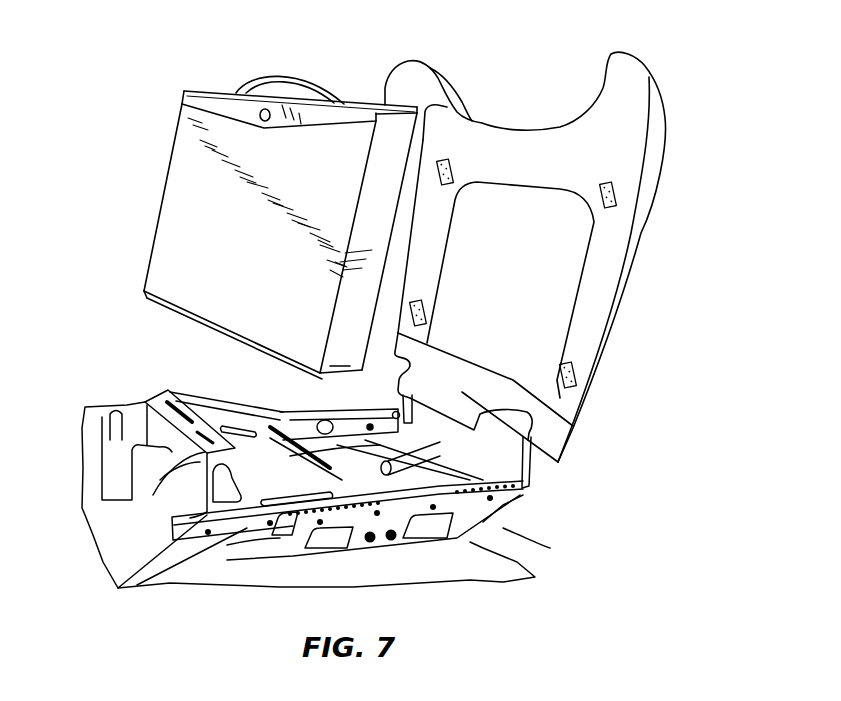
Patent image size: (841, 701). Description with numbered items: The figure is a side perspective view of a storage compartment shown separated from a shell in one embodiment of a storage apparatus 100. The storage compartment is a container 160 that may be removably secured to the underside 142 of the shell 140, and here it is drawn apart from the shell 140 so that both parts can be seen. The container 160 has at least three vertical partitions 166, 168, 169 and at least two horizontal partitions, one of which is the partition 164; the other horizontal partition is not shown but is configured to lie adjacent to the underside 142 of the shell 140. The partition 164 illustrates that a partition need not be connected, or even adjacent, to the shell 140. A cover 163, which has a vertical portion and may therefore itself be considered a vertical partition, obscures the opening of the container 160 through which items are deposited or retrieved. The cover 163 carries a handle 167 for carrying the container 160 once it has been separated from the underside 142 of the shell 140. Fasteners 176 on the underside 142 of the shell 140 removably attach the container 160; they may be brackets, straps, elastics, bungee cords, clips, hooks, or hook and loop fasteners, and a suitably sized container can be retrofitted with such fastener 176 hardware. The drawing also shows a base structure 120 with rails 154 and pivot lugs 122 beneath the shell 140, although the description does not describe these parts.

The storage apparatus 100 is at (122, 58).
The seat base 120 is at (500, 528).
The pivot lug 122 is at (402, 425).
The shell 140 is at (660, 127).
The underside of the shell 142 is at (555, 260).
The rail 154 is at (398, 410).
The storage compartment 160 is at (150, 172).
The cover 163 is at (183, 93).
The horizontal partition 164 is at (248, 318).
The vertical partition 166 is at (172, 306).
The handle 167 is at (268, 80).
The vertical partition 168 is at (340, 340).
The vertical partition 169 is at (150, 240).
The fasteners 176 is at (603, 187).